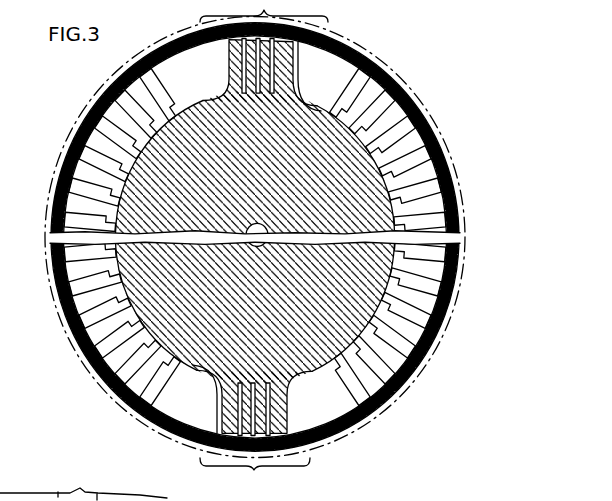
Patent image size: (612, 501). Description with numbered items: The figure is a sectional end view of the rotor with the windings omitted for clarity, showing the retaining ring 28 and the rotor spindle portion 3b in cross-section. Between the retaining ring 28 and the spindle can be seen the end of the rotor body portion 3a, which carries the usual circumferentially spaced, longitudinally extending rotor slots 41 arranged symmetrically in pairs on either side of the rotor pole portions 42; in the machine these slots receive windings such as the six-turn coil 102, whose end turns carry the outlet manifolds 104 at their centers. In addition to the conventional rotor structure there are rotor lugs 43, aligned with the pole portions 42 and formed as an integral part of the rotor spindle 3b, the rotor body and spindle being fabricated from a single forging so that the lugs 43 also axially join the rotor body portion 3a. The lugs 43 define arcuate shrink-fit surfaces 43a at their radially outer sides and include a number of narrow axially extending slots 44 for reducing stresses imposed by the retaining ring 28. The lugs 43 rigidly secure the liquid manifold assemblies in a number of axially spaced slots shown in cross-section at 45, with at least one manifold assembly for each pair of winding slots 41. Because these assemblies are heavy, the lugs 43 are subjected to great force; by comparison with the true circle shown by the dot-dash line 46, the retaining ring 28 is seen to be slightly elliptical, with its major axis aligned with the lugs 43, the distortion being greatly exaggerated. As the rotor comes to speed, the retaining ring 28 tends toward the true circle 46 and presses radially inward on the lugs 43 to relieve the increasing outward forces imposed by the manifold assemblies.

The retaining ring 28 is at (346, 48).
The rotor slots 41 is at (120, 201).
The rotor pole portions 42 is at (264, 244).
The rotor lugs 43 is at (229, 52).
The arcuate shrink-fit surfaces 43a is at (292, 38).
The axially extending slots 44 is at (272, 93).
The axially spaced slots 45 is at (278, 398).
The true circle 46 is at (469, 240).
The coil 102 is at (179, 92).
The outlet manifolds 104 is at (176, 120).
The rotor body portion 3a is at (213, 92).
The rotor spindle portion 3b is at (325, 106).